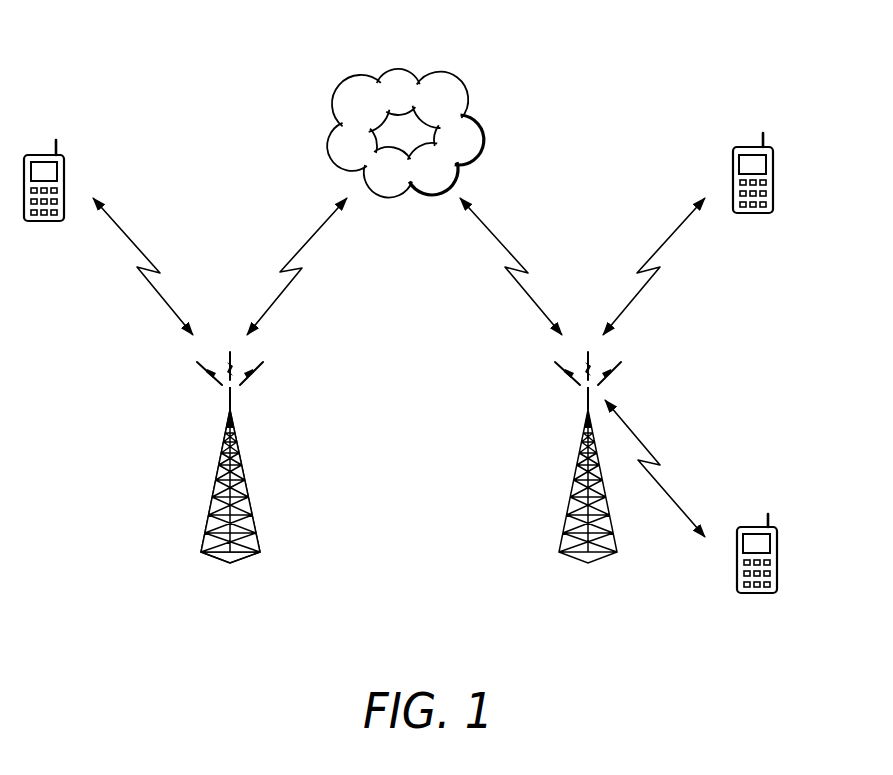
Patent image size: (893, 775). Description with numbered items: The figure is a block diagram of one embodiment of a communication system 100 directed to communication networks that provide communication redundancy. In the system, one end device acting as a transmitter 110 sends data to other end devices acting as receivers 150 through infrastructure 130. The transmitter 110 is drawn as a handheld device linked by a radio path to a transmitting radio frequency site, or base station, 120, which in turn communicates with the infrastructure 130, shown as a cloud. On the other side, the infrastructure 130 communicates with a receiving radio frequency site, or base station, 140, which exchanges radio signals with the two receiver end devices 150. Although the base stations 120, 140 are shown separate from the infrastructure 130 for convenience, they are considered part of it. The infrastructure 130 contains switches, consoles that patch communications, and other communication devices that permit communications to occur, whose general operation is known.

The communication system 100 is at (788, 44).
The end device (transmitter) 110 is at (64, 175).
The transmitting radio frequency site (base station) 120 is at (249, 487).
The infrastructure 130 is at (439, 158).
The receiving radio frequency site (base station) 140 is at (571, 488).
The end devices (receivers) 150 is at (774, 182).